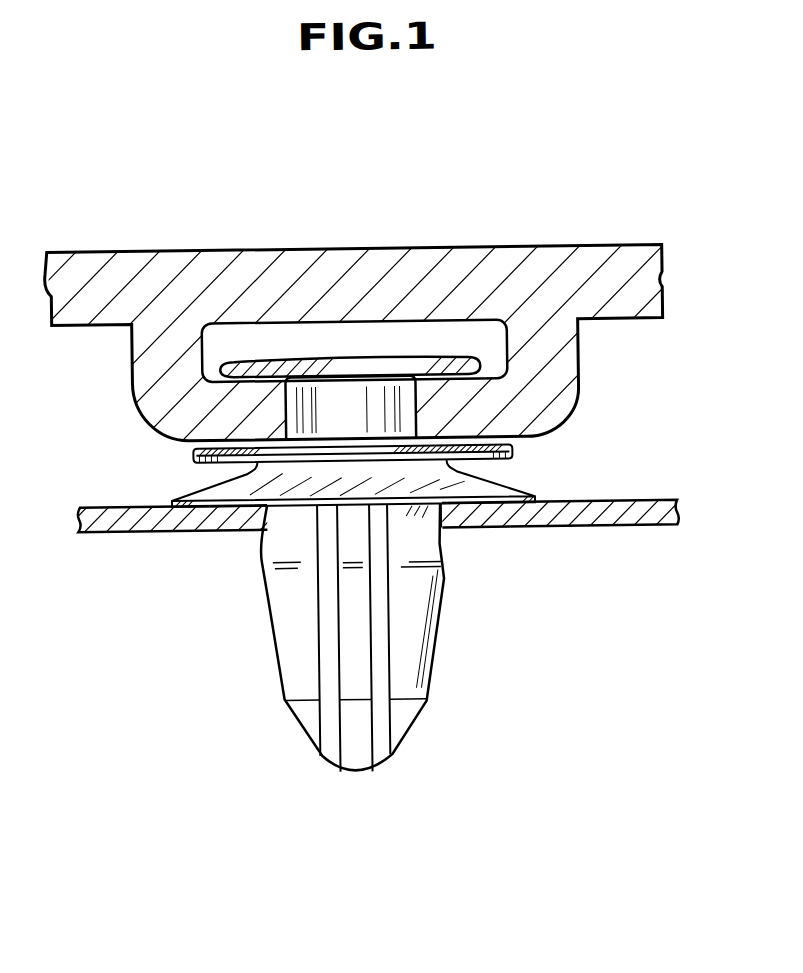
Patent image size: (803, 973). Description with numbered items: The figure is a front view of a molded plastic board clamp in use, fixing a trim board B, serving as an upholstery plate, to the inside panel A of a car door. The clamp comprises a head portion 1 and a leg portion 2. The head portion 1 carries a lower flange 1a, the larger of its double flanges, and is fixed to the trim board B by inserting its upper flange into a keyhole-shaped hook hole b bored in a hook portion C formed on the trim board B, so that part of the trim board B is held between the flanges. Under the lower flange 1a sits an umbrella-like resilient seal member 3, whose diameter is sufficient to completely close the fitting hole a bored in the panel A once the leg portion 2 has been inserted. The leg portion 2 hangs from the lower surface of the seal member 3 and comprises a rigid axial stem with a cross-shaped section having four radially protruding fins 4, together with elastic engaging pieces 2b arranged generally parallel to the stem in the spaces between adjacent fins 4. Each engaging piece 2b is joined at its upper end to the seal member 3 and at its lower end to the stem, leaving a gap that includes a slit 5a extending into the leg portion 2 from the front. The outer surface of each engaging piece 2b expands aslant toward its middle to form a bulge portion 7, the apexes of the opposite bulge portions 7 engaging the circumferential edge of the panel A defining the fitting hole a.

The head portion 1 is at (350, 351).
The lower flange 1a is at (500, 463).
The leg portion 2 is at (340, 674).
The elastic engaging pieces 2b is at (408, 668).
The umbrella-like resilient seal member 3 is at (475, 491).
The fins 4 is at (356, 612).
The slit 5a is at (418, 779).
The bulge portion 7 is at (444, 576).
The inside panel A is at (679, 503).
The trim board B is at (653, 281).
The hook portion C is at (562, 369).
The fitting hole a is at (443, 517).
The hook hole b is at (271, 401).